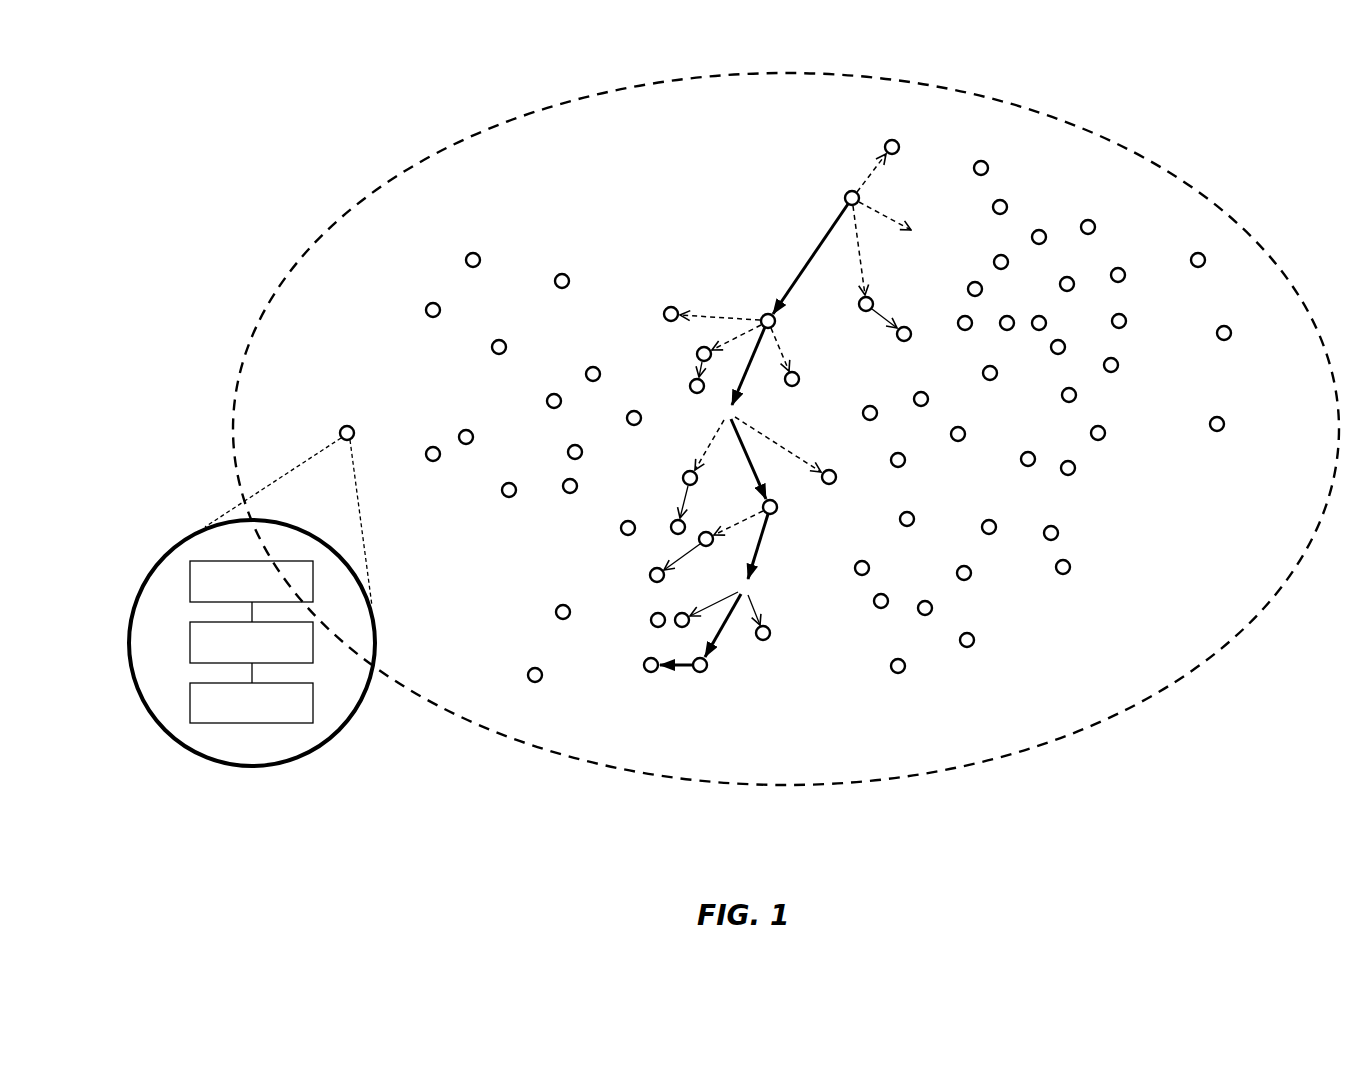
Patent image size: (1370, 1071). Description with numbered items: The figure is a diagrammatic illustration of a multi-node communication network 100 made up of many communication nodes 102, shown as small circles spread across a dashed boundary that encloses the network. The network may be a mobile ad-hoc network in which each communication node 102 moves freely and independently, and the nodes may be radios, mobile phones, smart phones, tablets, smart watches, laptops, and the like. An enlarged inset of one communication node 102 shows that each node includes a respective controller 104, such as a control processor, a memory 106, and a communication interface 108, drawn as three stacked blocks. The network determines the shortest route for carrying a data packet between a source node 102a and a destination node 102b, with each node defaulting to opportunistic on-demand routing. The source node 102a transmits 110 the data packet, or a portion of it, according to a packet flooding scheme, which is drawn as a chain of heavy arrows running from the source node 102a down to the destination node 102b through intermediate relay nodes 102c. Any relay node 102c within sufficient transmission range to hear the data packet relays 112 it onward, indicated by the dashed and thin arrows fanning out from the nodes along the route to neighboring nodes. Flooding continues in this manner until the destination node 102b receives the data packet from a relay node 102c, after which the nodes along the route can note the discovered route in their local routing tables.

The multi-node communication network 100 is at (162, 110).
The communication node 102 is at (339, 428).
The source node 102a is at (846, 191).
The destination node 102b is at (645, 672).
The relay node 102c is at (761, 316).
The controller 104 is at (233, 596).
The memory 106 is at (233, 659).
The communication interface 108 is at (233, 717).
The transmit 110 is at (822, 240).
The relay 112 is at (894, 217).